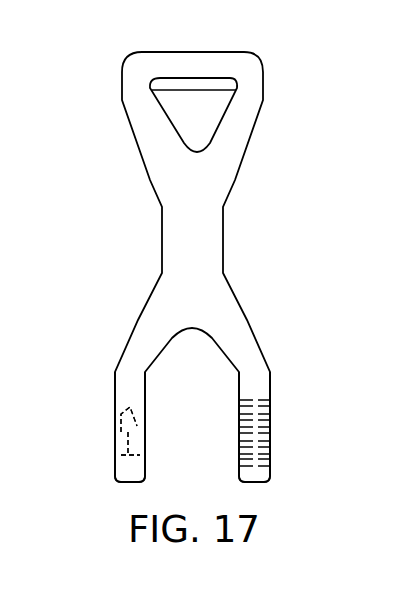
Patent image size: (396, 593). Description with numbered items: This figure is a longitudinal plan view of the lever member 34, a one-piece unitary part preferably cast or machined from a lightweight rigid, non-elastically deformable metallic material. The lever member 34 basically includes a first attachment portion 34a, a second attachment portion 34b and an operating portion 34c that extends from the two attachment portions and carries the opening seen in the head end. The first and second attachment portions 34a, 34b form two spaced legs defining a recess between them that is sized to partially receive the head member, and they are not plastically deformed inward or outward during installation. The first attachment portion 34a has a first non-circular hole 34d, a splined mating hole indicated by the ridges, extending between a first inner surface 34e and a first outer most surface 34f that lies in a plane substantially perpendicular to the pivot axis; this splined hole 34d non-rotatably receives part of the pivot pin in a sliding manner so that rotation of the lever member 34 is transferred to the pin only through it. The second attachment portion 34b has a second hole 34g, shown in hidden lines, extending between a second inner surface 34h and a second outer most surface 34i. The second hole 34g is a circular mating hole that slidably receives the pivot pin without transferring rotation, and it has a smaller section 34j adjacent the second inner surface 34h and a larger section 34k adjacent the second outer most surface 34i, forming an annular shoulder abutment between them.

The lever member 34 is at (303, 91).
The first attachment portion 34a is at (272, 488).
The second attachment portion 34b is at (113, 487).
The operating portion 34c is at (218, 157).
The first non-circular hole 34d is at (258, 424).
The first inner surface 34e is at (239, 390).
The first outer most surface 34f is at (273, 383).
The second hole 34g is at (108, 368).
The second inner surface 34h is at (146, 468).
The second outer most surface 34i is at (126, 464).
The smaller section 34j is at (128, 442).
The larger section 34k is at (121, 425).